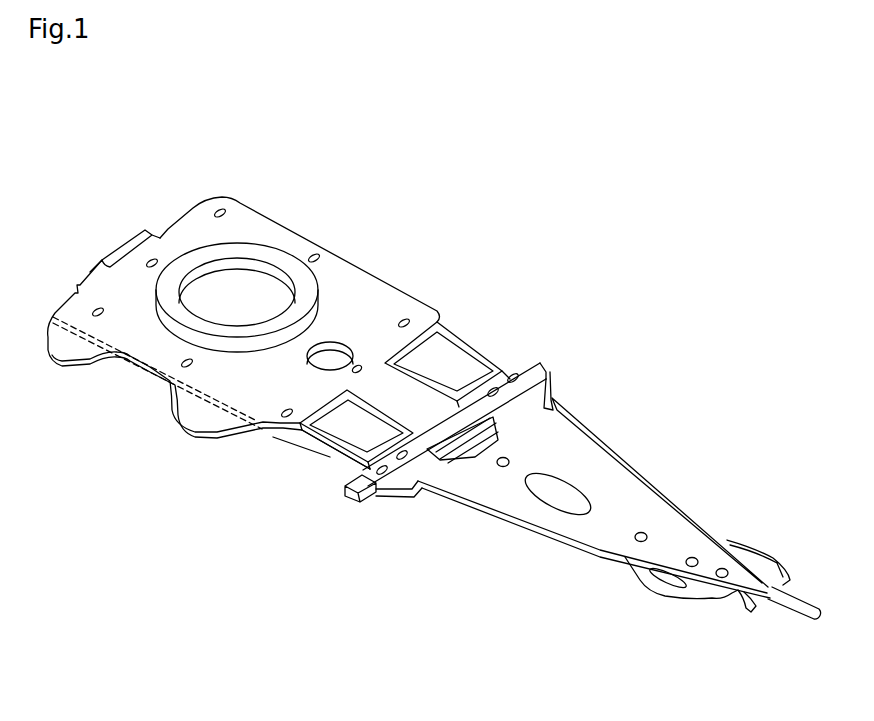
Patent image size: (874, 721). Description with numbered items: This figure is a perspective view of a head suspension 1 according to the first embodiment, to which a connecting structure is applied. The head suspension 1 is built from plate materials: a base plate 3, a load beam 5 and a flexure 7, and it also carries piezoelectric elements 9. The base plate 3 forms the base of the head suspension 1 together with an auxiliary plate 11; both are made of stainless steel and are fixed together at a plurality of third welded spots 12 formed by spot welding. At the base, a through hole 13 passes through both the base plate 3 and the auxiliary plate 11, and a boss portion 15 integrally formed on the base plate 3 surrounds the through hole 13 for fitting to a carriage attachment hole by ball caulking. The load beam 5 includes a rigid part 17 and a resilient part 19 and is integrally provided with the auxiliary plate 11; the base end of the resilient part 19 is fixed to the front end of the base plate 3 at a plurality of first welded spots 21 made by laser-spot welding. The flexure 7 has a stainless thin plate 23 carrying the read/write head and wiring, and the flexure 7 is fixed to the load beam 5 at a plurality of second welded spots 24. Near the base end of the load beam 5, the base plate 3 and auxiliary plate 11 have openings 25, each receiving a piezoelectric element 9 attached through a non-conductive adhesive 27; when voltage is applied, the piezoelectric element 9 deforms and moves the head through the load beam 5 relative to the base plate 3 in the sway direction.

The head suspension 1 is at (475, 252).
The base plate 3 is at (347, 293).
The load beam 5 is at (627, 500).
The flexure 7 is at (653, 592).
The piezoelectric element 9 is at (450, 360).
The auxiliary plate 11 is at (229, 416).
The third welded spots 12 is at (322, 250).
The through hole 13 is at (243, 260).
The boss portion 15 is at (205, 247).
The rigid part 17 is at (670, 527).
The resilient part 19 is at (537, 393).
The first welded spots 21 is at (517, 378).
The thin plate 23 is at (448, 461).
The second welded spots 24 is at (697, 560).
The opening 25 is at (438, 327).
The non-conductive adhesive 27 is at (452, 362).